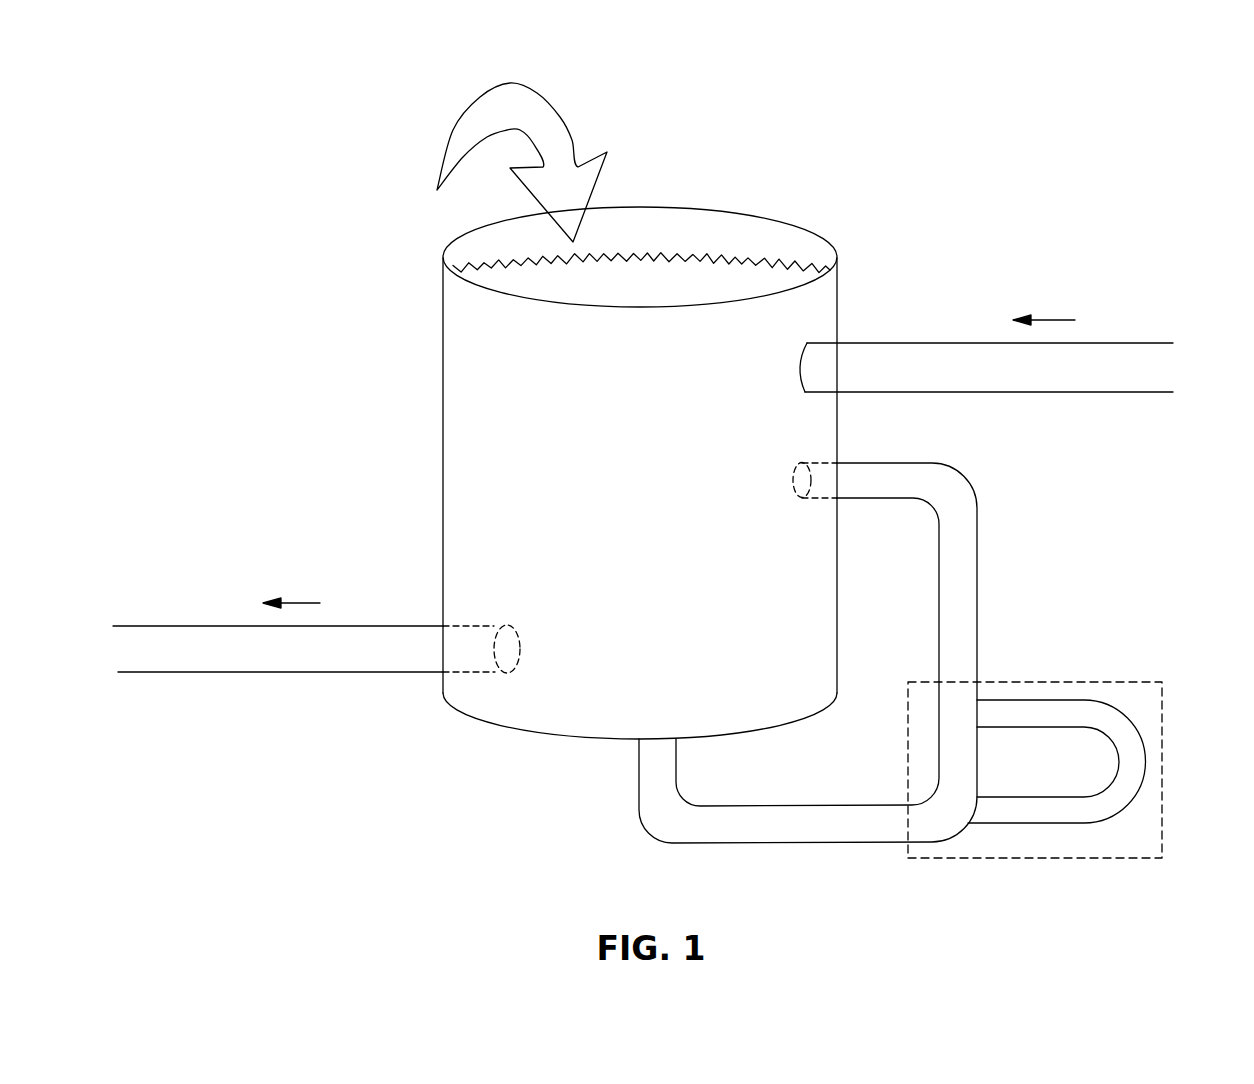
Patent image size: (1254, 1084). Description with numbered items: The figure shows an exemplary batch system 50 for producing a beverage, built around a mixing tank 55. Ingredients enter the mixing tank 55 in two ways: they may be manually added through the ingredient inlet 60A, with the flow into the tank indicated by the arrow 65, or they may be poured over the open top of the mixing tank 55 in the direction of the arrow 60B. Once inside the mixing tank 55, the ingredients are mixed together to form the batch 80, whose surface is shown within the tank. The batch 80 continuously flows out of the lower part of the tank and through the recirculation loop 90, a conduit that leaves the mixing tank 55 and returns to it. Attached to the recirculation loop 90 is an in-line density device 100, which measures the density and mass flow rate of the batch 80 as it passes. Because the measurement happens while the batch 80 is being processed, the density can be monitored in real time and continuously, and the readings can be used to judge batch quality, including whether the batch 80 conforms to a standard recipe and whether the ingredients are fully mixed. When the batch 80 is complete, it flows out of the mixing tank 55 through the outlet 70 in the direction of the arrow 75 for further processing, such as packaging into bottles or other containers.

The batch system 50 is at (410, 110).
The mixing tank 55 is at (683, 205).
The ingredient inlet 60A is at (900, 357).
The arrow 60B is at (560, 117).
The arrow 65 is at (1052, 320).
The outlet 70 is at (179, 635).
The arrow 75 is at (295, 603).
The batch 80 is at (738, 285).
The recirculation loop 90 is at (938, 462).
The in-line density device 100 is at (1140, 712).